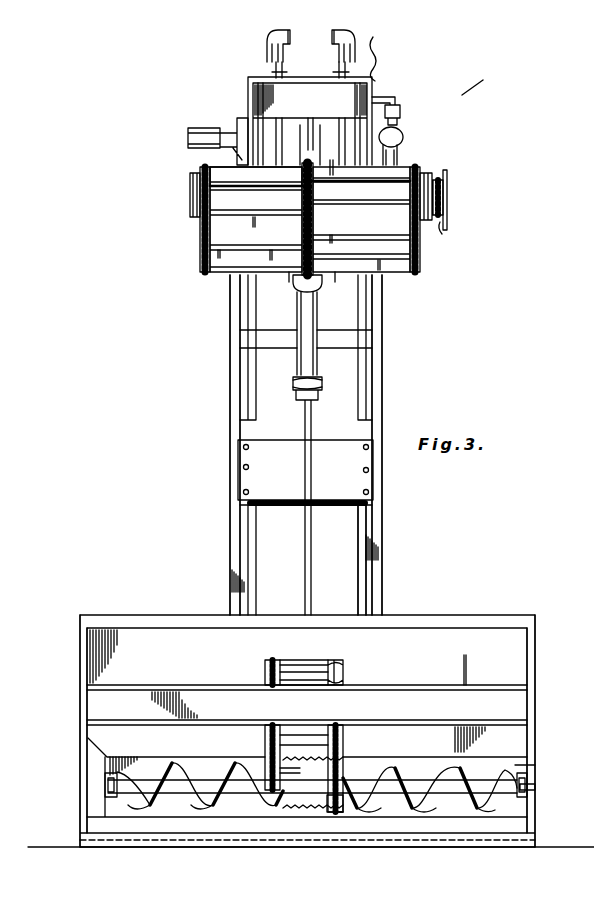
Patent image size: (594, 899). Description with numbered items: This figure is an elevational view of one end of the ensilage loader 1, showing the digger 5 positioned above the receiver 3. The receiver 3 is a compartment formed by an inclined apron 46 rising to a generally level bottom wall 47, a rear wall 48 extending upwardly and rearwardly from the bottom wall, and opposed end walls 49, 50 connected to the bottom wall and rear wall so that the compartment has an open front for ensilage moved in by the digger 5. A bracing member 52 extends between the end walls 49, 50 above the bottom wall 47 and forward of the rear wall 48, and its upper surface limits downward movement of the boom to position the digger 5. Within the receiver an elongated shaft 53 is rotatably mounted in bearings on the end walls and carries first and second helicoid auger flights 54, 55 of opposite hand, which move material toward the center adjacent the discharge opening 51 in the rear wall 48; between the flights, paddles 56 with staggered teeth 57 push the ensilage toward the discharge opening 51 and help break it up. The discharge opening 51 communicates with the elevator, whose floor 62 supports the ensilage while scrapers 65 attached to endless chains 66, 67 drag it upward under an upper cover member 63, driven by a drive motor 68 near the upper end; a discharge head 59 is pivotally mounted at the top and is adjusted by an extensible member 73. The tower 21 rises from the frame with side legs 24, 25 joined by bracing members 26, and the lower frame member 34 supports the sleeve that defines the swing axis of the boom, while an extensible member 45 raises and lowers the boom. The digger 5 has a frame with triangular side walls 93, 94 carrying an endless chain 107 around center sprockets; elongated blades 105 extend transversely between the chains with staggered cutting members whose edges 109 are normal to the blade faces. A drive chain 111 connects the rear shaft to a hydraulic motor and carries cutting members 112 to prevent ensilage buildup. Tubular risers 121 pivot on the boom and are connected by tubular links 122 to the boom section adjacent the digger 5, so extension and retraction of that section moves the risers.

The ensilage loader 1 is at (462, 95).
The receiver 3 is at (536, 620).
The digger 5 is at (198, 166).
The tower 21 is at (230, 337).
The side leg 24 is at (384, 372).
The side leg 25 is at (230, 389).
The bracing member 26 is at (243, 472).
The lower frame member 34 is at (367, 340).
The extensible member 45 is at (297, 366).
The apron 46 is at (428, 838).
The bottom wall 47 is at (401, 820).
The rear wall 48 is at (535, 765).
The end wall 49 is at (80, 672).
The end wall 50 is at (535, 701).
The discharge opening 51 is at (340, 812).
The bracing member 52 is at (404, 686).
The elongated shaft 53 is at (180, 816).
The first helicoid auger flight 54 is at (158, 816).
The second helicoid auger flight 55 is at (490, 813).
The paddles 56 is at (273, 824).
The teeth 57 is at (303, 814).
The discharge head 59 is at (250, 80).
The floor 62 is at (322, 742).
The upper cover member 63 is at (345, 568).
The scrapers 65 is at (321, 660).
The endless chain 66 is at (264, 671).
The endless chain 67 is at (328, 667).
The drive motor 68 is at (222, 128).
The extensible member 73 is at (400, 140).
The side wall 93 is at (200, 272).
The side wall 94 is at (420, 272).
The elongated blades 105 is at (215, 222).
The endless chain 107 is at (295, 203).
The edge 109 is at (352, 203).
The endless chain 111 is at (436, 225).
The cutting members 112 is at (446, 171).
The tubular risers 121 is at (264, 43).
The tubular links 122 is at (283, 32).